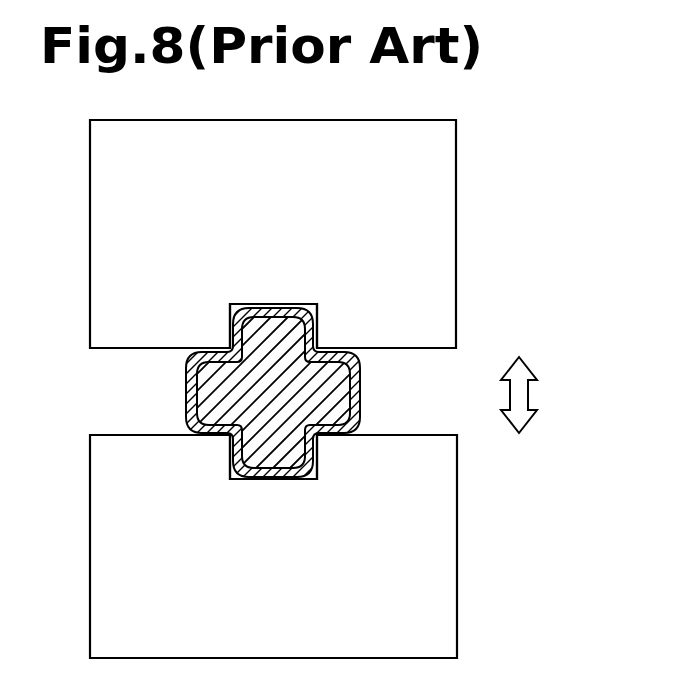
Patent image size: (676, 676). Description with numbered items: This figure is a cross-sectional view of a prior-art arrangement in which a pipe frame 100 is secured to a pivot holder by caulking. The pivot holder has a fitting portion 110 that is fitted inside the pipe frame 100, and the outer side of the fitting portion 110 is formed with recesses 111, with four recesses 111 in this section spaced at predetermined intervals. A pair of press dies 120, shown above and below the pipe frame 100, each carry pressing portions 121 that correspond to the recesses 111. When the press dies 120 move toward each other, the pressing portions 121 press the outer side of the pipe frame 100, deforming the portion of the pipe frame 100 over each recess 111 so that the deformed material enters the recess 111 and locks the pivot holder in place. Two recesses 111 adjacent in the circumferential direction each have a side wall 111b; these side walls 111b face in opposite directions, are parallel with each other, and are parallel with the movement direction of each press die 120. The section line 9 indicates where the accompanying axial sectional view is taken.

The line 9— 9 is at (180, 296).
The pipe frame 100 is at (193, 414).
The fitting portion 110 is at (192, 361).
The recess 111 is at (318, 341).
The side wall 111b is at (230, 308).
The press die 120 is at (456, 152).
The pressing portion 121 is at (224, 334).